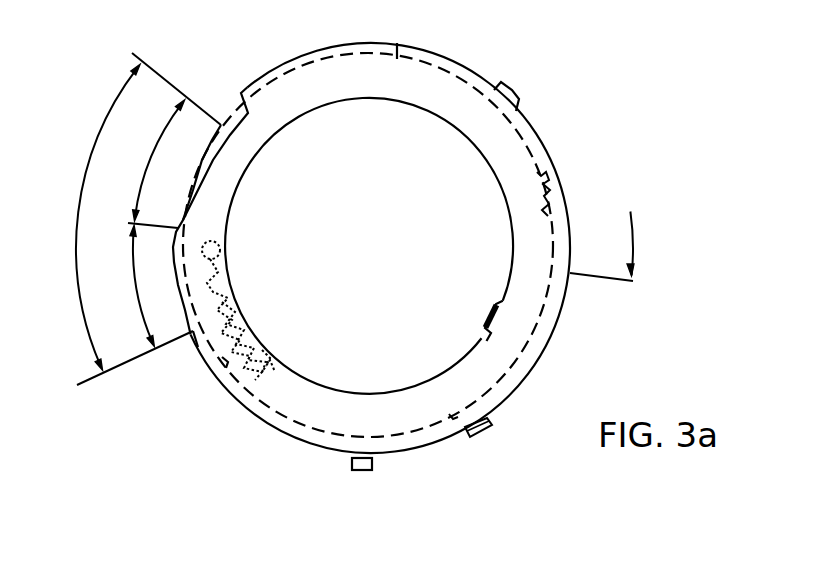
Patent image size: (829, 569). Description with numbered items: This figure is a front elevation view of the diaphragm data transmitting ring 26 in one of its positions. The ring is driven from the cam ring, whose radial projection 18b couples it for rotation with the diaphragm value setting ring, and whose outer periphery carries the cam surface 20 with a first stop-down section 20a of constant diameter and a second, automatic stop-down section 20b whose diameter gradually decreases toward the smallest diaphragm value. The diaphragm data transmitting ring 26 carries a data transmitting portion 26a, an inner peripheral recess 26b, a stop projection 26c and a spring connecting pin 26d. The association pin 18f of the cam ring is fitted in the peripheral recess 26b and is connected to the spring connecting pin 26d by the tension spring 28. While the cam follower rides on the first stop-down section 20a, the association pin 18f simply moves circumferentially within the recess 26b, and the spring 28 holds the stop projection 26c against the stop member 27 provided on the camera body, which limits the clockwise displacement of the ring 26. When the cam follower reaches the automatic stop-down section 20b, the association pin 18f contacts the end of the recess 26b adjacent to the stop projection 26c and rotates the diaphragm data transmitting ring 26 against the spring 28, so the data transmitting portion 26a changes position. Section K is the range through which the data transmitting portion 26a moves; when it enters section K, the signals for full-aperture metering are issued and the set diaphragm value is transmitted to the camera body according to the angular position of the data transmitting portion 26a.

The cam surface 20 is at (130, 219).
The first stop-down section 20a is at (123, 286).
The second stop-down section 20b is at (144, 160).
The diaphragm data transmitting ring 26 is at (397, 43).
The data transmitting portion 26a is at (551, 178).
The inner peripheral recess 26b is at (214, 372).
The stop projection 26c is at (480, 437).
The spring connecting pin 26d is at (215, 253).
The stop member 27 is at (362, 472).
The tension spring 28 is at (225, 298).
The radial projection 18b is at (510, 94).
The association pin 18f is at (267, 353).
The section K is at (608, 247).